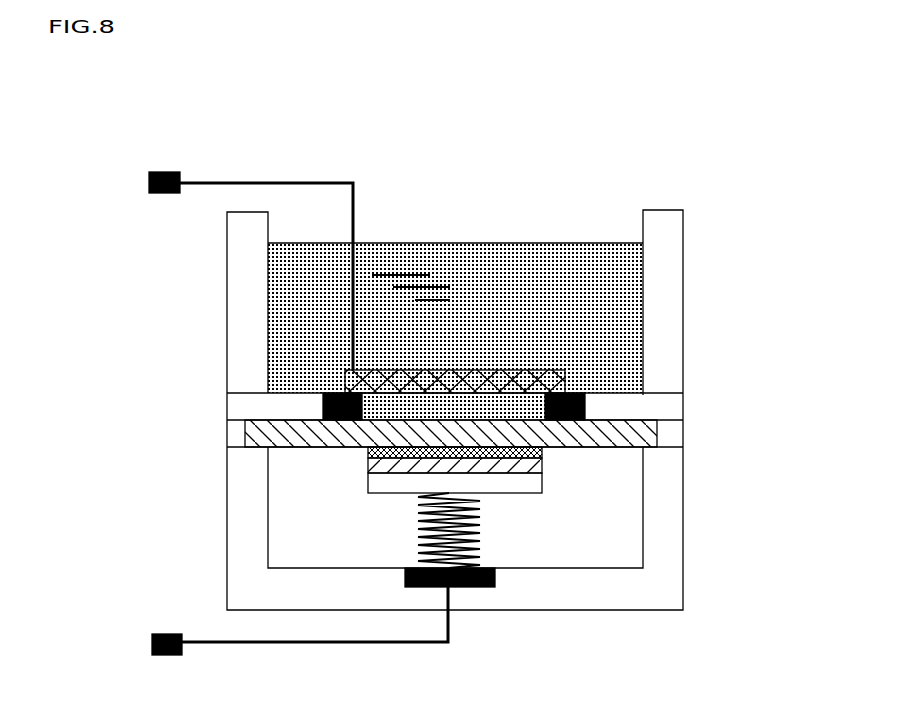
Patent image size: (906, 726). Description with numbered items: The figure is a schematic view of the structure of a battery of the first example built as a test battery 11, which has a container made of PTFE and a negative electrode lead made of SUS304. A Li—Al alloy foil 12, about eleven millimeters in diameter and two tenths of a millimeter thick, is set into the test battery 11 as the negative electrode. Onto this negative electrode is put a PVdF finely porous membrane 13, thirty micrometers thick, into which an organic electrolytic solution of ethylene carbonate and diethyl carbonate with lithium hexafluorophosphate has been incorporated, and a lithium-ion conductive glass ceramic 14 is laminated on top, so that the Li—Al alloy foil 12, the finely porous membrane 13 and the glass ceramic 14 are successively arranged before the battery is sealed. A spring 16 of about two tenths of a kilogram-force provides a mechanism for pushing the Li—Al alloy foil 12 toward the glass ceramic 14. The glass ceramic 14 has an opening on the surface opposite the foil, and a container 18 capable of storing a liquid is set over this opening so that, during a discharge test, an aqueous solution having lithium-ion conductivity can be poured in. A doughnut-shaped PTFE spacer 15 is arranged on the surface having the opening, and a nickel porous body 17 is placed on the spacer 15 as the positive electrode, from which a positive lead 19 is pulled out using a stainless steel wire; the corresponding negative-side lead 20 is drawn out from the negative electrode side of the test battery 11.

The test battery 11 is at (640, 587).
The Li—Al alloy foil 12 is at (542, 468).
The finely porous membrane 13 is at (542, 455).
The lithium-ion conductive glass ceramic 14 is at (600, 432).
The PTFE spacer 15 is at (575, 403).
The spring 16 is at (463, 555).
The nickel porous body 17 is at (490, 370).
The container 18 is at (660, 302).
The positive lead 19 is at (173, 177).
The terminal 20 is at (170, 648).